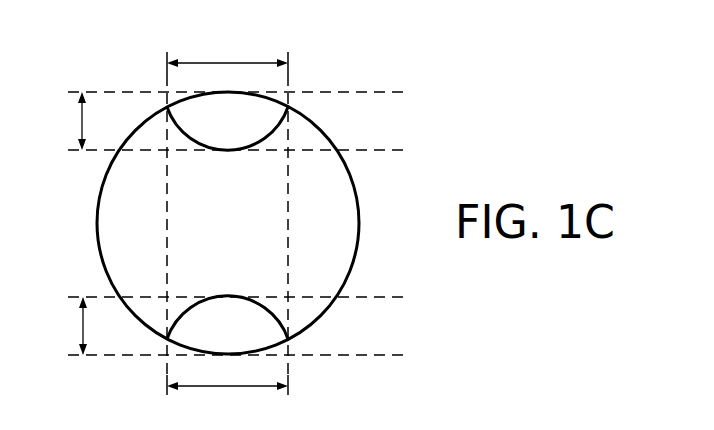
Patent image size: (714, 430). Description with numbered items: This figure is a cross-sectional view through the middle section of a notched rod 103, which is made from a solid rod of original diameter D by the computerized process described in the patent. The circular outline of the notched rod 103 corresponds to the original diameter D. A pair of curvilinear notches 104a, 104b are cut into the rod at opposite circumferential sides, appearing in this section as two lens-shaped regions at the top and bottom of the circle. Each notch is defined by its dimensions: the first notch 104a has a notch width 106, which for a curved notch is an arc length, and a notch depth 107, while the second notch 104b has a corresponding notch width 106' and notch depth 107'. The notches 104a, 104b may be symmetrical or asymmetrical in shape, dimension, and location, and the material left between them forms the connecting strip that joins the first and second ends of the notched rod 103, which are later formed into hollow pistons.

The notched rod 103 is at (253, 233).
The notch 104a is at (282, 138).
The notch 104b is at (275, 310).
The notch width 106 is at (227, 42).
The notch width 106' is at (247, 406).
The notch depth 107 is at (60, 104).
The notch depth 107' is at (62, 344).
The original diameter D is at (257, 223).